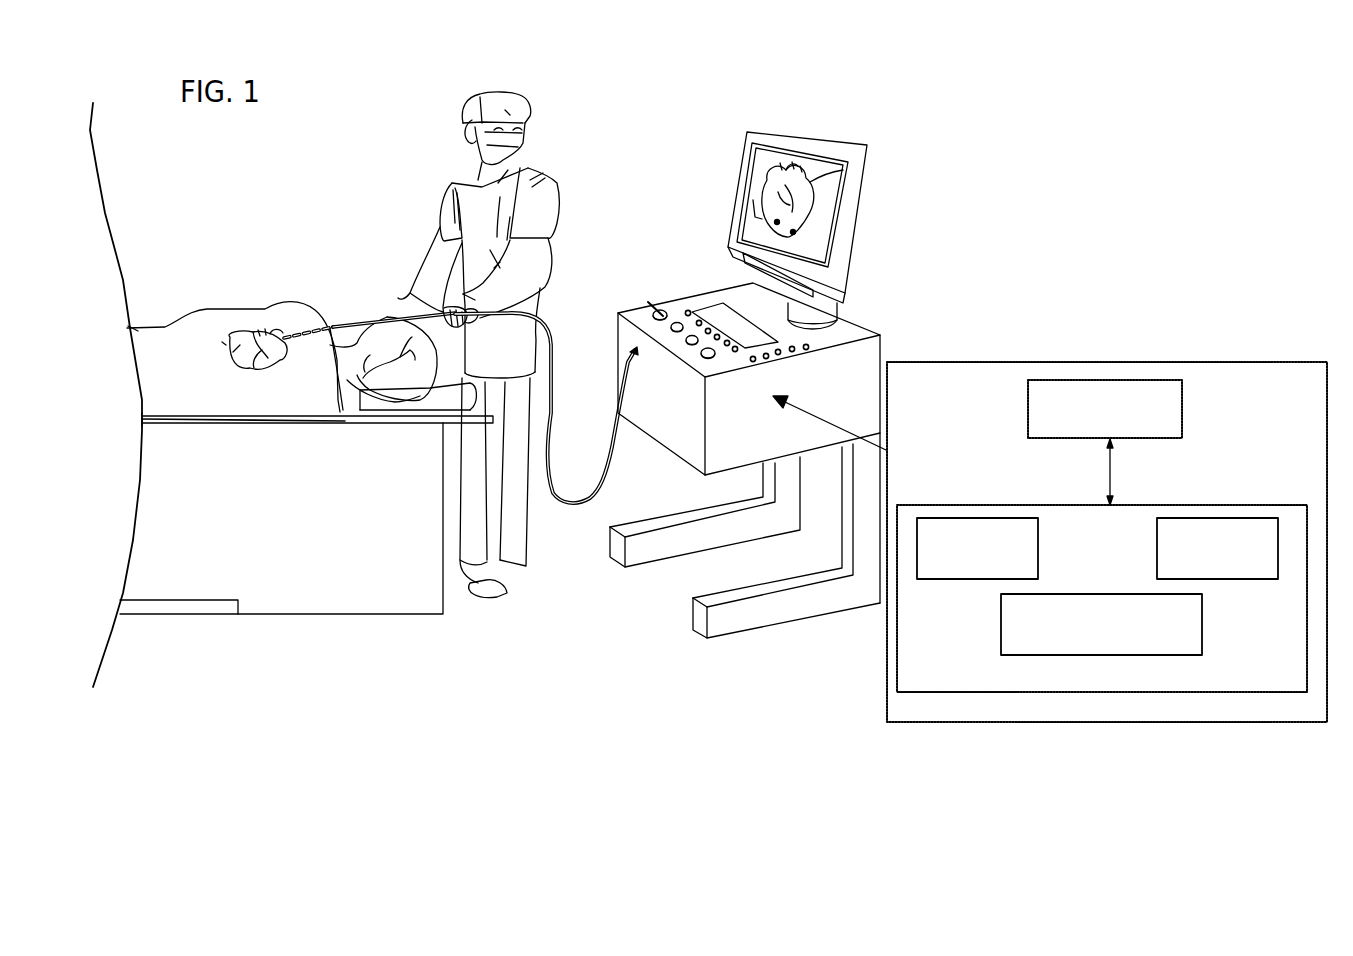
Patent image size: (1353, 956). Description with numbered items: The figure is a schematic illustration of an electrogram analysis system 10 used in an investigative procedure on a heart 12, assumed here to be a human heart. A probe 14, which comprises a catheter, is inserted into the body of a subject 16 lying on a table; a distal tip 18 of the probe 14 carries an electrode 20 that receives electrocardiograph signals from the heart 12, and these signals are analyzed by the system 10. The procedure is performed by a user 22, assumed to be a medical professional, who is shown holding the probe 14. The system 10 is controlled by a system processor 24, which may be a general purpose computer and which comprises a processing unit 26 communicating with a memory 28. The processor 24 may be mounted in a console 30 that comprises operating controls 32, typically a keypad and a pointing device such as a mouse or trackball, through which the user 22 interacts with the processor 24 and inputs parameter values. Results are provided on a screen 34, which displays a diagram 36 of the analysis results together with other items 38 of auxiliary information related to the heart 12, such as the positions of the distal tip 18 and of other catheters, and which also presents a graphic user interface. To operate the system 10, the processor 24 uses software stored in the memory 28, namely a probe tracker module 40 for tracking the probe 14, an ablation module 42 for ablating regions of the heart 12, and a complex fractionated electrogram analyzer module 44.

The electrogram analysis system 10 is at (771, 337).
The heart 12 is at (267, 333).
The probe 14 is at (553, 337).
The subject 16 is at (415, 378).
The distal tip 18 is at (243, 334).
The electrode 20 is at (226, 285).
The user 22 is at (465, 213).
The system processor 24 is at (928, 723).
The processing unit 26 is at (1046, 380).
The memory 28 is at (897, 677).
The console 30 is at (693, 293).
The operating controls 32 is at (650, 248).
The screen 34 is at (778, 138).
The diagram 36 is at (805, 208).
The other items of auxiliary information 38 is at (777, 222).
The probe tracker module 40 is at (985, 518).
The ablation module 42 is at (1239, 518).
The complex fractionated electrogram (CFE) analyzer module 44 is at (1106, 594).